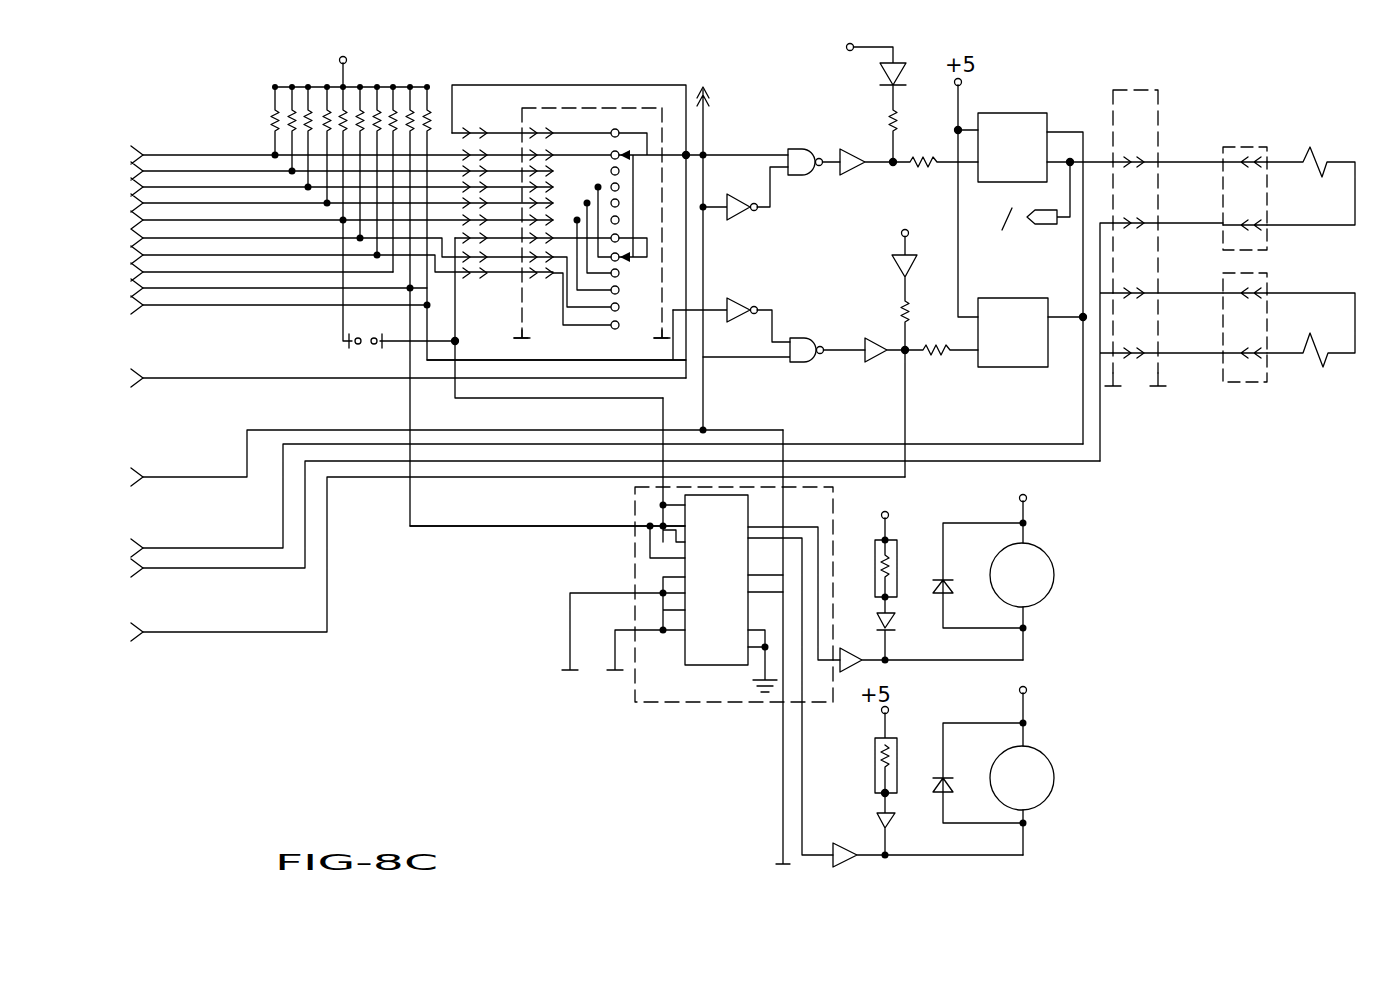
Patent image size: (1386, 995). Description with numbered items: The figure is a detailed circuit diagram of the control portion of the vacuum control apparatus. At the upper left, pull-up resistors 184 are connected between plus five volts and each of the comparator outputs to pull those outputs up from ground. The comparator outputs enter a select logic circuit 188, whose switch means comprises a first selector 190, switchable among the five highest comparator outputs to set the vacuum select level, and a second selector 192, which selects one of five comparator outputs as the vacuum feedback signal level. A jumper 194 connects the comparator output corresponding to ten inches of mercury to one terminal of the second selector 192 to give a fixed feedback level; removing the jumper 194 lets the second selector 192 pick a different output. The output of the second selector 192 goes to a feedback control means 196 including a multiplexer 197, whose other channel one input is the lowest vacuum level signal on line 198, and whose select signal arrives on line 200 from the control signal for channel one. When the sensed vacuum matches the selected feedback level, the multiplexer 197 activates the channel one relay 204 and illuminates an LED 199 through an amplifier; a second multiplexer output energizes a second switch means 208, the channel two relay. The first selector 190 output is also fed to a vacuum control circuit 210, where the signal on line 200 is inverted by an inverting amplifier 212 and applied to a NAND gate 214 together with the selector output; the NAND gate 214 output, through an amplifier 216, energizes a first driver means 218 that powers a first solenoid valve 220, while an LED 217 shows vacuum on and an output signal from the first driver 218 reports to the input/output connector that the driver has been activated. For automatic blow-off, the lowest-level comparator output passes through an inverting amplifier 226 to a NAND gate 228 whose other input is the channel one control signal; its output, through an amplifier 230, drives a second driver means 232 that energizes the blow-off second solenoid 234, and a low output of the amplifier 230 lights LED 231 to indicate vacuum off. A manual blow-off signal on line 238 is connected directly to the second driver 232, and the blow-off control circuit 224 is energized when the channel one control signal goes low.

The pull-up resistors 184 is at (327, 110).
The select logic circuit 188 is at (545, 105).
The first selector 190 is at (645, 148).
The second selector 192 is at (640, 264).
The jumper 194 is at (348, 341).
The feedback control means 196 is at (652, 675).
The multiplexer 197 is at (718, 668).
The line 198 is at (447, 529).
The LED 199 is at (897, 620).
The line 200 is at (692, 424).
The relay CR1 204 is at (1053, 557).
The second switch means 208 is at (1053, 760).
The vacuum control circuit 210 is at (1090, 140).
The inverting amplifier 212 is at (758, 211).
The NAND gate 214 is at (787, 150).
The amplifier 216 is at (843, 149).
The LED 217 is at (880, 73).
The first driver means 218 is at (1010, 112).
The first solenoid valve 220 is at (1317, 157).
The blow-off control circuit 224 is at (1033, 380).
The inverting amplifier 226 is at (736, 302).
The NAND gate 228 is at (823, 322).
The amplifier 230 is at (875, 363).
The LED 231 is at (890, 263).
The second driver means 232 is at (1023, 284).
The second solenoid 234 is at (1333, 364).
The line 238 is at (212, 633).